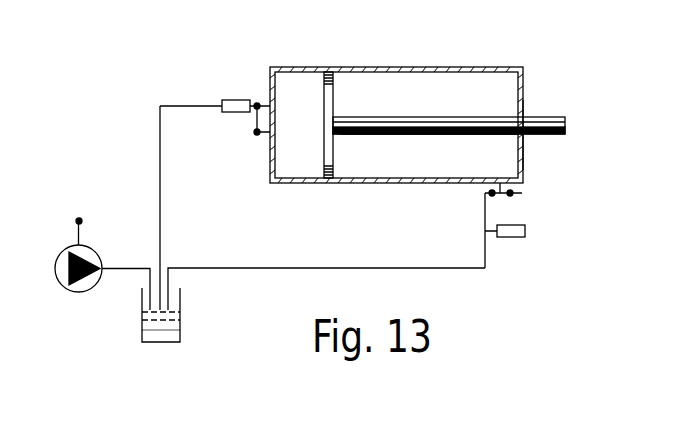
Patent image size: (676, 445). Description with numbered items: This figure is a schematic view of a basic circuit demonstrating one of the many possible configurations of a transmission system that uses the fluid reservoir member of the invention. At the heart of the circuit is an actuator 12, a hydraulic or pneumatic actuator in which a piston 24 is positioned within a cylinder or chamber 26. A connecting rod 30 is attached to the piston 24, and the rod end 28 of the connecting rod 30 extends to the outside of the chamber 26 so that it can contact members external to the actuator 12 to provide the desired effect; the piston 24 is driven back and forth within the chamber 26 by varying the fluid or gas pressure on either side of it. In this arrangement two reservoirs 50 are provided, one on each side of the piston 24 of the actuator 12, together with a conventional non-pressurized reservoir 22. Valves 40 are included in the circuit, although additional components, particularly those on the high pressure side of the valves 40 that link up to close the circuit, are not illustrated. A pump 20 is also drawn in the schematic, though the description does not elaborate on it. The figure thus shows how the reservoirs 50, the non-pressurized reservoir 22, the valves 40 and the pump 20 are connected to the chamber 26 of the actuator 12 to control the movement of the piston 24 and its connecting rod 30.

The actuator 12 is at (497, 97).
The pump 20 is at (85, 293).
The non-pressurized reservoir 22 is at (165, 345).
The piston 24 is at (324, 138).
The chamber 26 is at (520, 151).
The rod end 28 is at (562, 125).
The connecting rod 30 is at (457, 134).
The valve 40 is at (256, 108).
The reservoir 50 is at (233, 99).